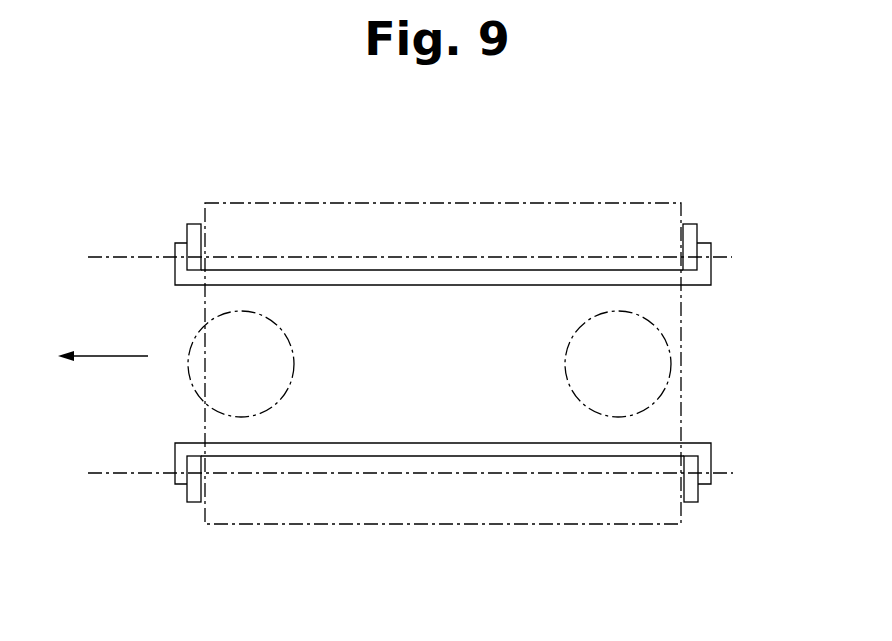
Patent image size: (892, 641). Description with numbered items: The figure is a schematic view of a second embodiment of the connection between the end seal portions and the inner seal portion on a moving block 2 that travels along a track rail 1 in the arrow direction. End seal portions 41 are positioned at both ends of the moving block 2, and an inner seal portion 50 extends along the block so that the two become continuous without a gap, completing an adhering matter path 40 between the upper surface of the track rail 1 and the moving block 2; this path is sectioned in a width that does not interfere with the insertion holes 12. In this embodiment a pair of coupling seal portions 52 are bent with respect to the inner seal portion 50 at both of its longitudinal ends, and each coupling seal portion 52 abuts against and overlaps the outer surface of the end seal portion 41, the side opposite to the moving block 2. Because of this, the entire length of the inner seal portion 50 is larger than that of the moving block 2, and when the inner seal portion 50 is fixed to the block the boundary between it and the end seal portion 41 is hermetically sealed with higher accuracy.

The track rail 1 is at (106, 252).
The moving block 2 is at (325, 197).
The insertion holes 12 is at (290, 380).
The adhering matter path 40 is at (477, 365).
The end seal portion 41 is at (196, 226).
The inner seal portion 50 is at (485, 280).
The coupling seal portion 52 is at (180, 268).